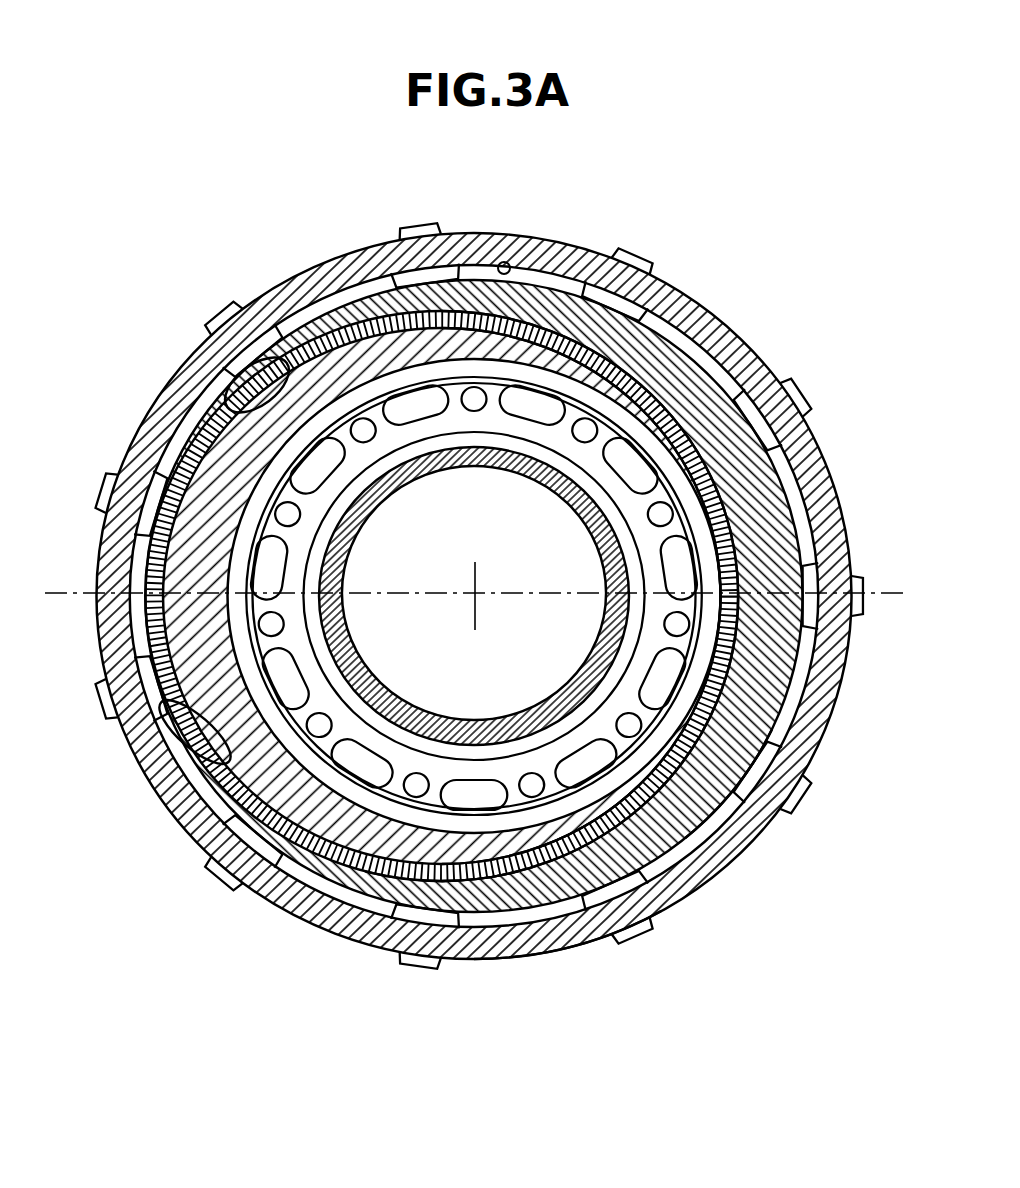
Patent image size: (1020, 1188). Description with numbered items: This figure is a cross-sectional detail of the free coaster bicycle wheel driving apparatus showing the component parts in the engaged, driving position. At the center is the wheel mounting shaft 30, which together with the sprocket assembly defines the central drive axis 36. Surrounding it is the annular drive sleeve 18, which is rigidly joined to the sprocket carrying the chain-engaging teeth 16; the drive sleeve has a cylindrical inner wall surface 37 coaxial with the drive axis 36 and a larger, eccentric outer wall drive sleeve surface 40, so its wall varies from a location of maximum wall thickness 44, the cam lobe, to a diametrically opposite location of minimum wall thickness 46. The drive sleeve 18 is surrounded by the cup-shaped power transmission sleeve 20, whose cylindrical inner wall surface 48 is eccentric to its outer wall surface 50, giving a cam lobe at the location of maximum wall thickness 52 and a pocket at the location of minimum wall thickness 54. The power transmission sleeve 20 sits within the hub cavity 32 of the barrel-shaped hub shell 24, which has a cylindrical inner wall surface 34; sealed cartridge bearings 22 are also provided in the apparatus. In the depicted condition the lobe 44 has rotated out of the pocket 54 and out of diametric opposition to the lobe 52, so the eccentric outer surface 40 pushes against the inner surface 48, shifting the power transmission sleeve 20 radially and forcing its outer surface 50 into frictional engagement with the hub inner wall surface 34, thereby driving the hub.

The teeth 16 is at (627, 249).
The drive sleeve 18 is at (497, 880).
The power transmission sleeve 20 is at (325, 307).
The sealed cartridge bearings 22 is at (620, 840).
The hub shell 24 is at (570, 953).
The wheel mounting shaft 30 is at (392, 732).
The hub cavity 32 is at (703, 367).
The inner wall surface 34 is at (507, 262).
The central drive axis 36 is at (478, 592).
The inner wall surface 37 is at (225, 757).
The outer wall drive sleeve surface 40 is at (675, 340).
The location of maximum wall thickness 44 is at (148, 585).
The location of minimum wall thickness 46 is at (765, 606).
The inner wall surface 48 is at (236, 398).
The outer wall surface 50 is at (705, 808).
The location of maximum wall thickness 52 is at (815, 605).
The location of minimum wall thickness 54 is at (130, 594).